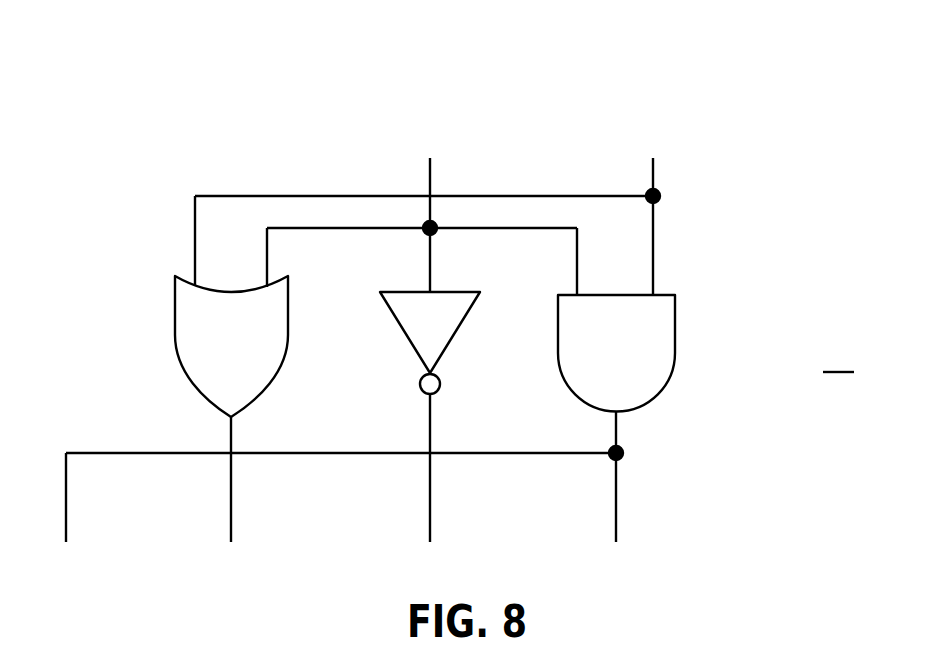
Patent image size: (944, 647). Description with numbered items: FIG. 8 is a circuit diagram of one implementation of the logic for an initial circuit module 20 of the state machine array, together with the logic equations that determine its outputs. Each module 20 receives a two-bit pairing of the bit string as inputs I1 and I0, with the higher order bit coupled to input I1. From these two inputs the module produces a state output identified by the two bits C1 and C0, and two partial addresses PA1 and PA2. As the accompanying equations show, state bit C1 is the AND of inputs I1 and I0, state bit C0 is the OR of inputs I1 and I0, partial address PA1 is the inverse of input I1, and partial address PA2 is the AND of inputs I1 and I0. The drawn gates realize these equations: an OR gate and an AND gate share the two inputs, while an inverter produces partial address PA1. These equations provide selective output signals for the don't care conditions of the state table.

The circuit module 20 is at (146, 84).
The input I1 is at (422, 210).
The input I0 is at (431, 210).
The state output bit C1 is at (318, 497).
The state output bit C0 is at (209, 479).
The partial address PA1 is at (399, 468).
The partial address PA2 is at (586, 476).